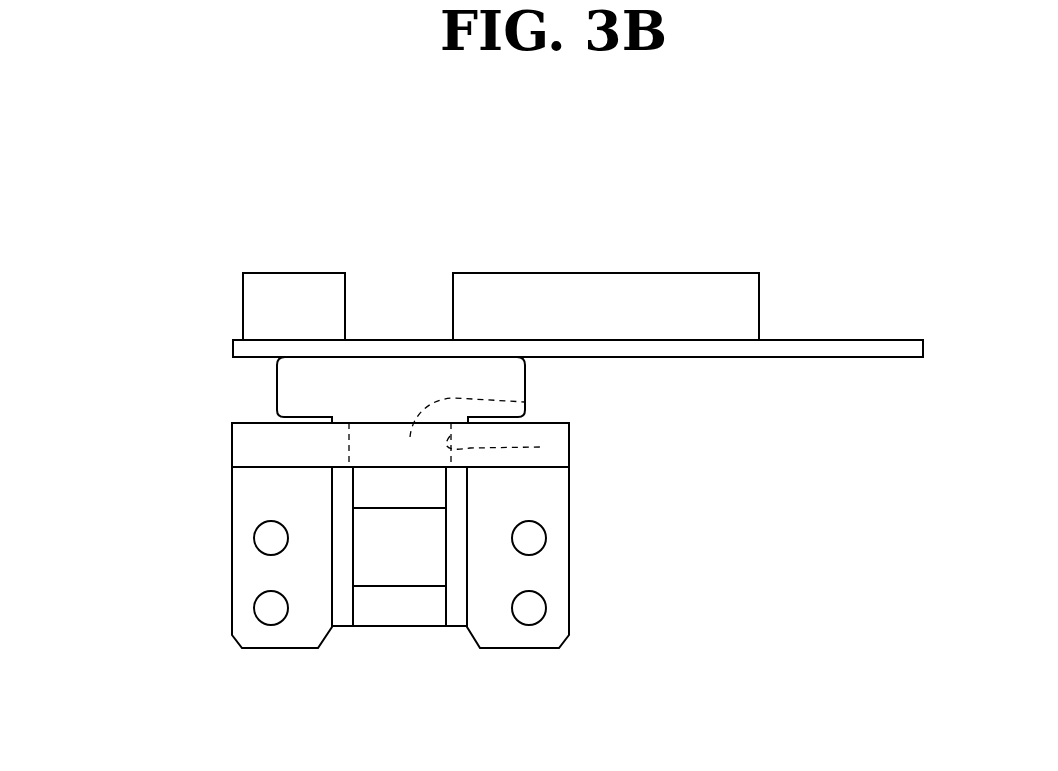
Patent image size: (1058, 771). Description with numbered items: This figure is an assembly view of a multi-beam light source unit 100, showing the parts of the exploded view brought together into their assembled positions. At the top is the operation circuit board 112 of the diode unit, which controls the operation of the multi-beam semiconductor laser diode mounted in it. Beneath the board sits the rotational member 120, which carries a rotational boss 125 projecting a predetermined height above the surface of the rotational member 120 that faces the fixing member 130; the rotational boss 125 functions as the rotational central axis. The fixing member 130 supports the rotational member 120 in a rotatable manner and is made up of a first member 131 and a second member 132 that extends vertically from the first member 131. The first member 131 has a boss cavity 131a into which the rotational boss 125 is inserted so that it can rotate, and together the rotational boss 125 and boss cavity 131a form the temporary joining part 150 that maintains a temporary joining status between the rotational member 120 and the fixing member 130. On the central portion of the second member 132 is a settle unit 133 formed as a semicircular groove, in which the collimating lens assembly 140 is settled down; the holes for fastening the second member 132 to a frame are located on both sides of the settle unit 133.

The multi-beam light source unit 100 is at (822, 223).
The operation circuit board 112 is at (233, 343).
The rotational member 120 is at (250, 385).
The rotational boss 125 is at (525, 402).
The fixing member 130 is at (125, 435).
The first member 131 is at (232, 446).
The boss cavity 131a is at (540, 447).
The second member 132 is at (232, 560).
The settle unit 133 is at (447, 612).
The collimating lens assembly 140 is at (398, 567).
The temporary joining part 150 is at (653, 375).